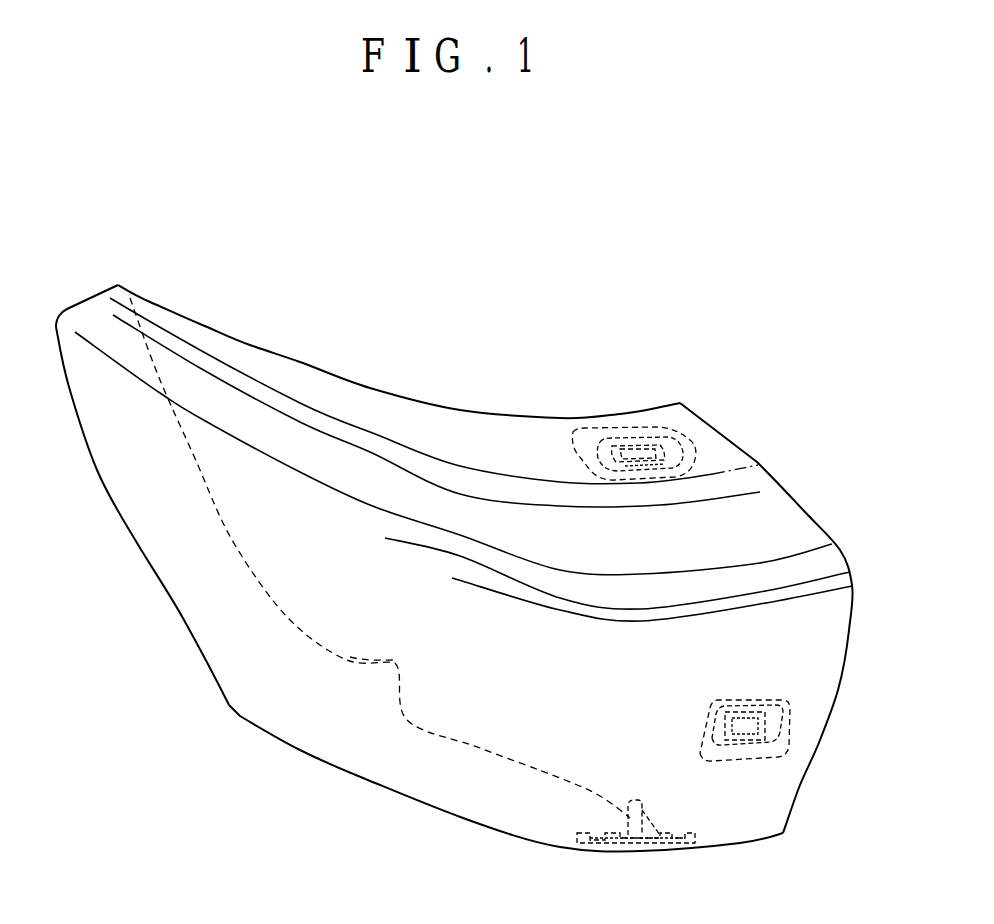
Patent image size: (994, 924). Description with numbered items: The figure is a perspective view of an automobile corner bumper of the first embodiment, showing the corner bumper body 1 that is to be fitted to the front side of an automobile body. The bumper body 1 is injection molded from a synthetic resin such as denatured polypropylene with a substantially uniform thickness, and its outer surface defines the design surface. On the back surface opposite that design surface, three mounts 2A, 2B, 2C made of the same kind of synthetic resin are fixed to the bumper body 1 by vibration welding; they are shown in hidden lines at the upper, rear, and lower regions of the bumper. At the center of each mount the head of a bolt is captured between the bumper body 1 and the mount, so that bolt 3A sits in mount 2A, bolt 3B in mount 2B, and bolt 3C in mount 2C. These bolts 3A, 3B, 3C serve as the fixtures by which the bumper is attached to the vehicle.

The corner bumper body 1 is at (416, 393).
The mount 2A is at (616, 448).
The mount 2B is at (777, 735).
The mount 2C is at (610, 850).
The bolt 3A is at (658, 438).
The bolt 3B is at (735, 700).
The bolt 3C is at (660, 850).